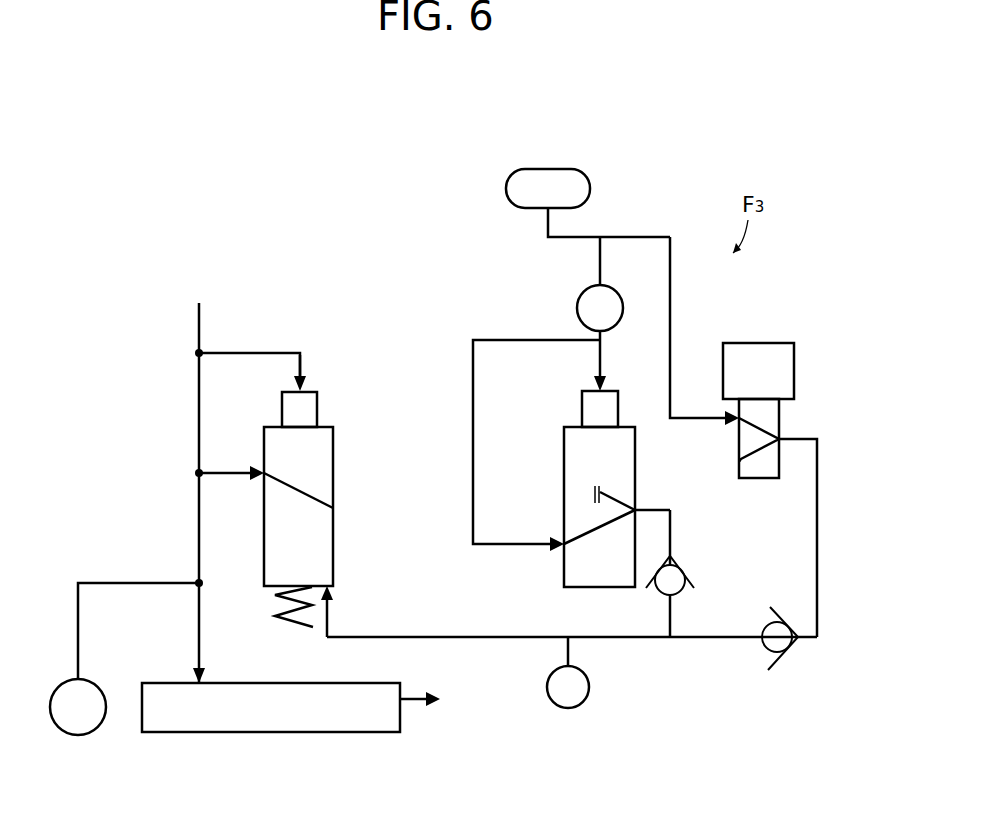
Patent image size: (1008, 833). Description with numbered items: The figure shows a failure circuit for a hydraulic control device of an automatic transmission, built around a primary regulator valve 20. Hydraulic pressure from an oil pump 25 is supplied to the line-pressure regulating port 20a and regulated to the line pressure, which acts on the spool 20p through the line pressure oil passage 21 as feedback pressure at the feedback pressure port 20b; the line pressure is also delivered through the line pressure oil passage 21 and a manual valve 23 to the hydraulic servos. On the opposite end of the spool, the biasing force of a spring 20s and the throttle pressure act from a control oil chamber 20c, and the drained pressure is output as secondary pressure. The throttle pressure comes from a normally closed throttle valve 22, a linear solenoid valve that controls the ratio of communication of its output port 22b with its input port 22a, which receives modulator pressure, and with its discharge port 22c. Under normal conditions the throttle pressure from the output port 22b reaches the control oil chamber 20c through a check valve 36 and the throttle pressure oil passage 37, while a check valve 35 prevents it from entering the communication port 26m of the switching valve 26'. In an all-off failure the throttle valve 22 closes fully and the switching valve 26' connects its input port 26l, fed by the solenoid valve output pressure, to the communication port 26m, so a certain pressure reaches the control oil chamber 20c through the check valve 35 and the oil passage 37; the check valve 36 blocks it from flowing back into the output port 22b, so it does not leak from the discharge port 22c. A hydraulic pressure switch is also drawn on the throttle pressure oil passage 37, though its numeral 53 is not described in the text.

The primary regulator valve 20 is at (356, 363).
The line-pressure regulating port 20a is at (262, 470).
The feedback pressure port 20b is at (312, 385).
The control oil chamber 20c is at (331, 592).
The spool 20p is at (318, 415).
The spring 20s is at (288, 631).
The line pressure oil passage 21 is at (199, 331).
The throttle valve 22 is at (822, 353).
The input port 22a is at (738, 410).
The output port 22b is at (781, 438).
The discharge port 22c is at (740, 462).
The manual valve 23 is at (250, 733).
The oil pump 25 is at (70, 678).
The switching valve 26' is at (588, 378).
The input port 26l is at (561, 552).
The communication port 26m is at (638, 505).
The check valve 35 is at (655, 585).
The check valve 36 is at (763, 645).
The throttle pressure oil passage 37 is at (637, 638).
The hydraulic pressure switch 53 is at (590, 684).